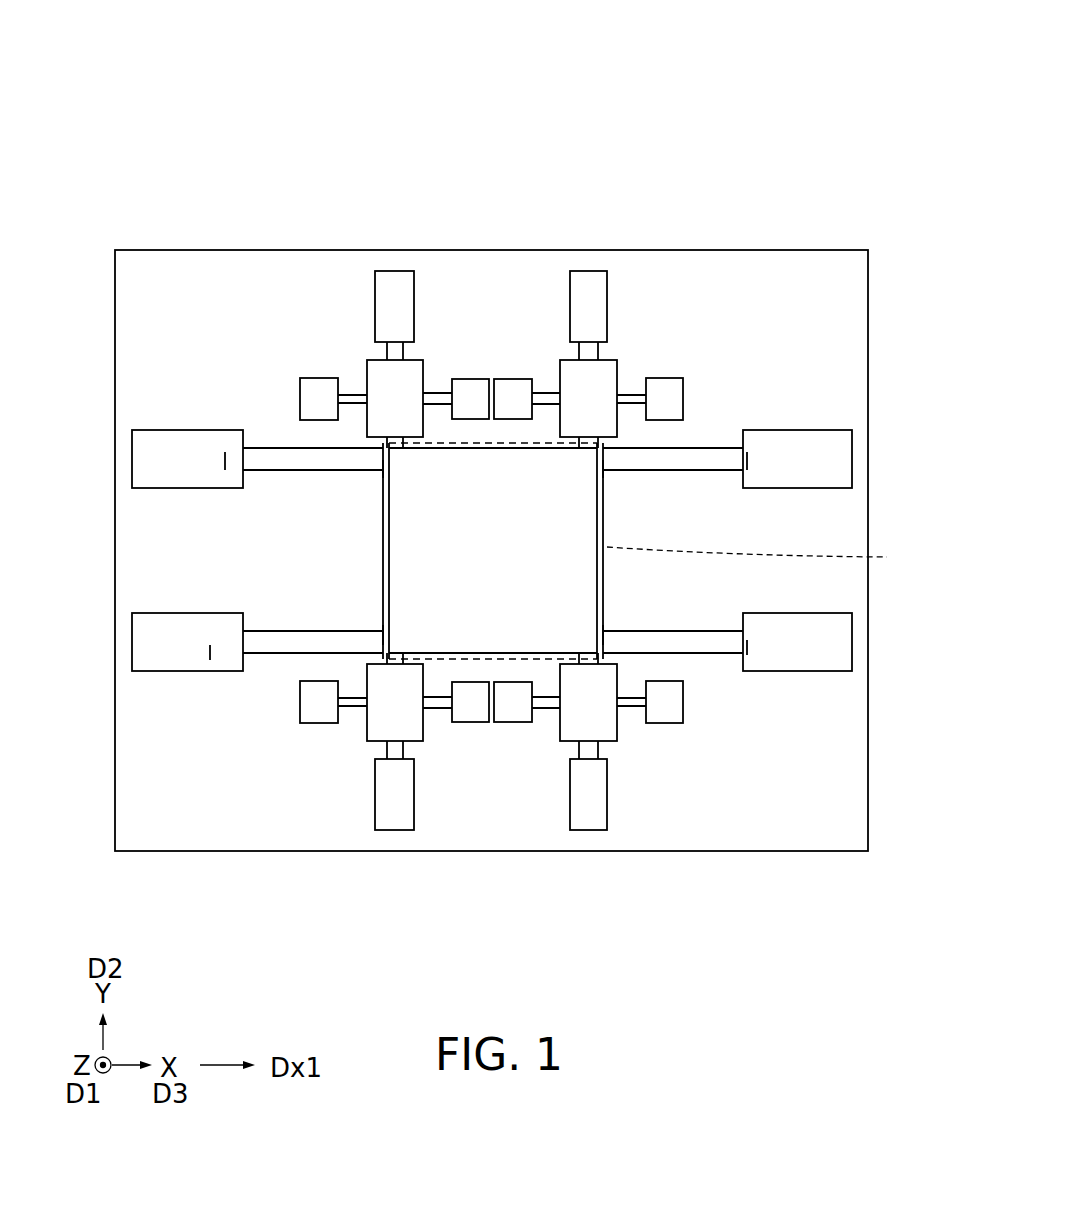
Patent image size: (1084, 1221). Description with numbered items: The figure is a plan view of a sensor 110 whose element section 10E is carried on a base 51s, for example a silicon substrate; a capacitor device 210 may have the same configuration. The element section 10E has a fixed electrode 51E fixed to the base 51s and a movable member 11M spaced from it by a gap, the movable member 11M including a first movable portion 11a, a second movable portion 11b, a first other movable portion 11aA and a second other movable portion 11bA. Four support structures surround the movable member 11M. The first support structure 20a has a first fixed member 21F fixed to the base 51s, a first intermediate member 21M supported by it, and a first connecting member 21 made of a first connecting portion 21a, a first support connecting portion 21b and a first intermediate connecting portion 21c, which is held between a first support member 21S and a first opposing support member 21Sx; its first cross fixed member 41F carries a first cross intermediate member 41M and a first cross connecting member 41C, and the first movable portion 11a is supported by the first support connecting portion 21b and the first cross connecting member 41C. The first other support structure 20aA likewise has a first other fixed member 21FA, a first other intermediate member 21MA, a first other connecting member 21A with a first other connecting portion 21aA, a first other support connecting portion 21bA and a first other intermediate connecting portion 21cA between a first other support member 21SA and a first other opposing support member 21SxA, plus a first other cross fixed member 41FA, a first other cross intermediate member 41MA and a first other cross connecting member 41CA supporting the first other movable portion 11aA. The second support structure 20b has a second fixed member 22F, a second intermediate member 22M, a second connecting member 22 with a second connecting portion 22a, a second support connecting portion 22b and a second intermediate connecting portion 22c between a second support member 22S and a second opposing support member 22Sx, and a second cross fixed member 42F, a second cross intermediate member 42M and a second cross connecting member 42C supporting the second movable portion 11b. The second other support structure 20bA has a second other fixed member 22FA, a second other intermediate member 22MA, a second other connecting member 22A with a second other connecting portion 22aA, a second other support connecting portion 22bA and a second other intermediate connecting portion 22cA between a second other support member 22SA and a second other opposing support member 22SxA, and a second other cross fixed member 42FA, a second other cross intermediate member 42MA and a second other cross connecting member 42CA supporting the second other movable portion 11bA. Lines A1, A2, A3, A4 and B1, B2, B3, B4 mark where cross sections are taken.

The element section 10E is at (737, 86).
The sensor 110 is at (806, 66).
The capacitor device 210 is at (858, 62).
The movable member 11M is at (603, 585).
The first movable portion 11a is at (384, 633).
The second movable portion 11b is at (603, 627).
The first other movable portion 11aA is at (381, 473).
The second other movable portion 11bA is at (603, 473).
The base 51s is at (153, 297).
The fixed electrode 51E is at (775, 558).
The first support structure 20a is at (210, 763).
The second support structure 20b is at (725, 742).
The first other support structure 20aA is at (243, 355).
The second other support structure 20bA is at (750, 367).
The first connecting member 21 is at (223, 862).
The first connecting portion 21a is at (385, 726).
The first support connecting portion 21b is at (386, 673).
The first intermediate connecting portion 21c is at (385, 700).
The first other connecting member 21A is at (191, 117).
The first other connecting portion 21aA is at (385, 375).
The first other support connecting portion 21bA is at (386, 425).
The first other intermediate connecting portion 21cA is at (385, 400).
The first fixed member 21F is at (394, 766).
The first other fixed member 21FA is at (393, 332).
The first intermediate member 21M is at (380, 712).
The first other intermediate member 21MA is at (381, 370).
The first support member 21S is at (318, 712).
The first other support member 21SA is at (317, 397).
The first opposing support member 21Sx is at (470, 710).
The first other opposing support member 21SxA is at (470, 390).
The second connecting member 22 is at (791, 865).
The second connecting portion 22a is at (603, 724).
The second support connecting portion 22b is at (603, 673).
The second intermediate connecting portion 22c is at (599, 698).
The second other connecting member 22A is at (812, 140).
The second other connecting portion 22aA is at (603, 378).
The second other support connecting portion 22bA is at (600, 432).
The second other intermediate connecting portion 22cA is at (599, 405).
The second fixed member 22F is at (597, 766).
The second other fixed member 22FA is at (597, 337).
The second intermediate member 22M is at (600, 712).
The second other intermediate member 22MA is at (600, 392).
The second support member 22S is at (513, 710).
The second other support member 22SA is at (513, 390).
The second opposing support member 22Sx is at (675, 706).
The second other opposing support member 22SxA is at (675, 395).
The first cross connecting member 41C is at (290, 651).
The first other cross connecting member 41CA is at (287, 456).
The first cross intermediate member 41M is at (210, 660).
The first other cross intermediate member 41MA is at (225, 452).
The first cross fixed member 41F is at (151, 665).
The first other cross fixed member 41FA is at (151, 450).
The second cross connecting member 42C is at (698, 653).
The second other cross connecting member 42CA is at (698, 447).
The second cross intermediate member 42M is at (747, 648).
The second other cross intermediate member 42MA is at (747, 455).
The second cross fixed member 42F is at (845, 652).
The second other cross fixed member 42FA is at (838, 450).
The section line A1 is at (400, 925).
The section line A2 is at (395, 935).
The section line A3 is at (595, 925).
The section line A4 is at (590, 935).
The section line B1 is at (920, 642).
The section line B2 is at (907, 650).
The section line B3 is at (920, 458).
The section line B4 is at (907, 467).